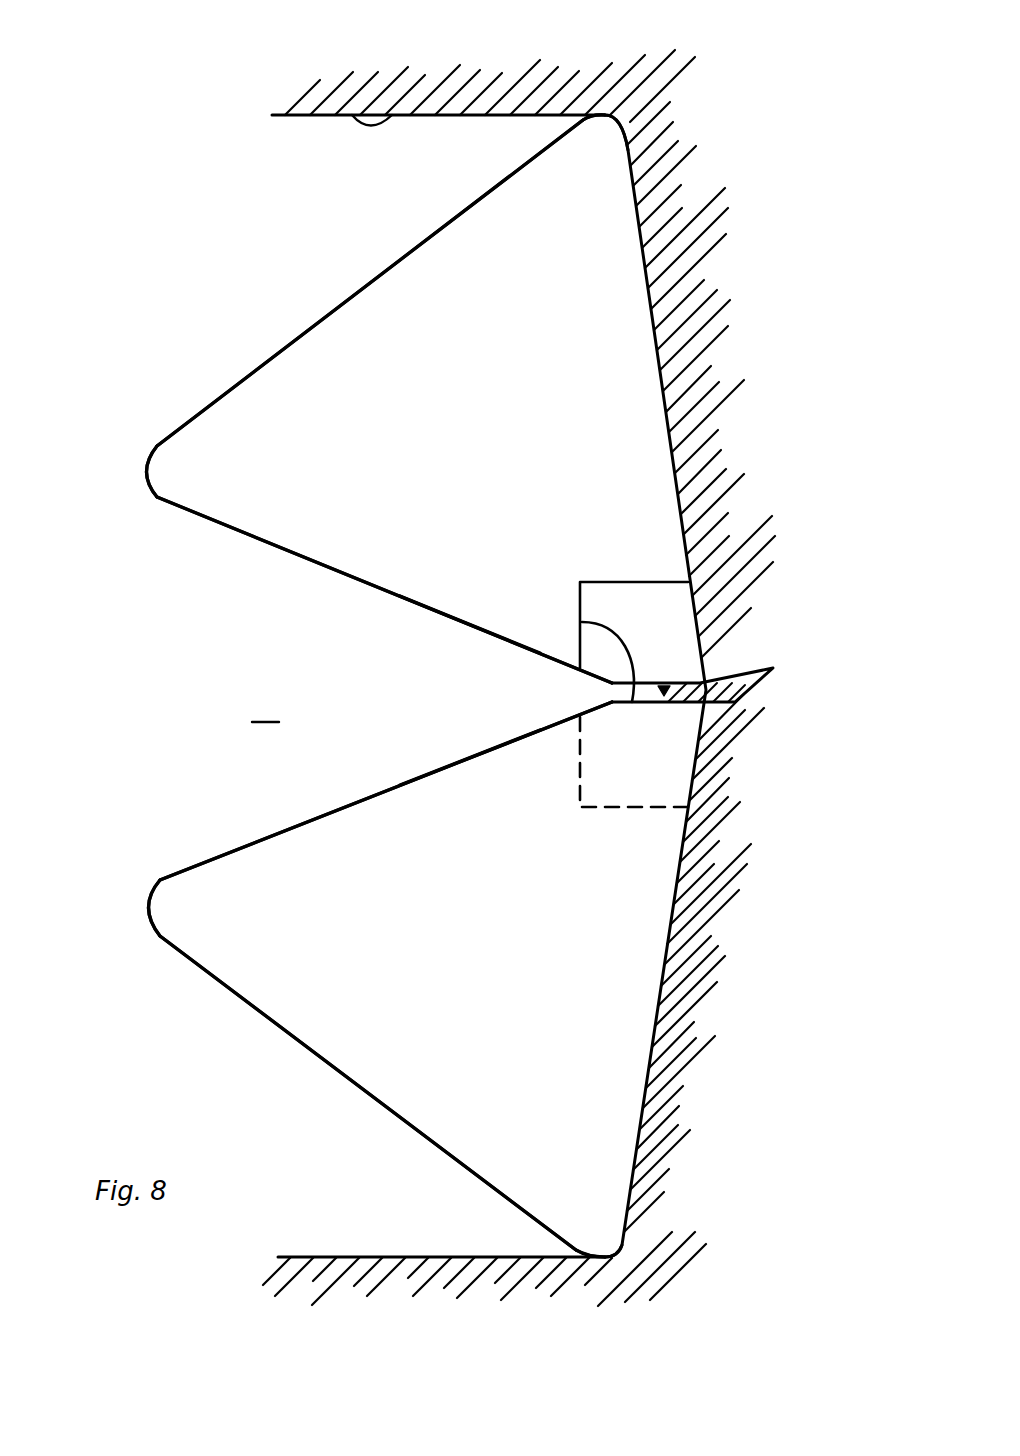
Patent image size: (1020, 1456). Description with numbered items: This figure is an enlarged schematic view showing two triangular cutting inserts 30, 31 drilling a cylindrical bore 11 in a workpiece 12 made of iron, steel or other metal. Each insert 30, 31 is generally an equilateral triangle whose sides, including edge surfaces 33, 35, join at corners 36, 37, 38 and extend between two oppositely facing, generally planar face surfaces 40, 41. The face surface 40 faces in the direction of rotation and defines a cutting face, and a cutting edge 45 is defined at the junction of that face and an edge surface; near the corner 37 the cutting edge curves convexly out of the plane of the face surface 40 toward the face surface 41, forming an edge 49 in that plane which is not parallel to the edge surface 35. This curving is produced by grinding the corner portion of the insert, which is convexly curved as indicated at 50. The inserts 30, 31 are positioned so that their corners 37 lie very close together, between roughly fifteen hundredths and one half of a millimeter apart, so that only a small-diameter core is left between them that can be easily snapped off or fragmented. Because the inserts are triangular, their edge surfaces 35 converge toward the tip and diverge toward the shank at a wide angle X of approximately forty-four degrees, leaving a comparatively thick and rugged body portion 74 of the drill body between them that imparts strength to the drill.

The cylindrical bore 11 is at (397, 115).
The workpiece 12 is at (462, 65).
The insert 30 is at (418, 311).
The insert 31 is at (307, 1004).
The edge surface 33 is at (306, 330).
The edge surface 35 is at (328, 570).
The corner 36 is at (632, 128).
The corner 37 is at (773, 668).
The corner 38 is at (141, 476).
The face surface 40 is at (431, 578).
The face surface 41 is at (435, 822).
The cutting edge 45 is at (674, 473).
The edge 49 is at (582, 622).
The convexly curved corner portion 50 is at (612, 580).
The body portion 74 is at (265, 706).
The angle X is at (500, 641).